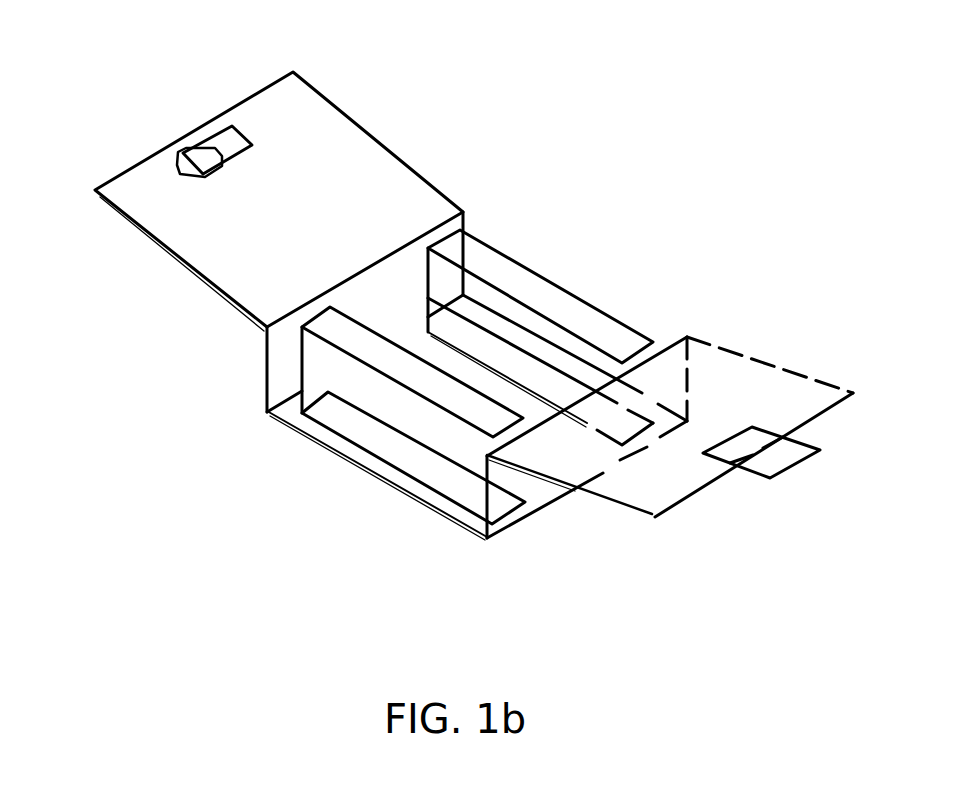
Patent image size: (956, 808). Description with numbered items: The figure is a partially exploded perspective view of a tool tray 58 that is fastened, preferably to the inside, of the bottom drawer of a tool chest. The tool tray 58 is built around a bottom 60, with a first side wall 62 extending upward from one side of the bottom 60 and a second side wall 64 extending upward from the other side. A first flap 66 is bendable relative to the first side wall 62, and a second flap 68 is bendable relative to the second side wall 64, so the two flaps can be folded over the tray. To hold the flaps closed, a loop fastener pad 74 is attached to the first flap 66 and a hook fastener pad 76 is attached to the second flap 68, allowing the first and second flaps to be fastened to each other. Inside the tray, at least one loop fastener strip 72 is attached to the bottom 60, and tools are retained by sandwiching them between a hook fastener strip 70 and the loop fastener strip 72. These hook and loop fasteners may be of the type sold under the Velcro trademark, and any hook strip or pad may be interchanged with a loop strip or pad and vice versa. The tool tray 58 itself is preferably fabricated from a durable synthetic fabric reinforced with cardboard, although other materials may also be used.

The tool tray 58 is at (262, 385).
The bottom 60 is at (482, 530).
The first side wall 62 is at (262, 352).
The second side wall 64 is at (545, 492).
The first flap 66 is at (368, 131).
The second flap 68 is at (718, 350).
The hook fastener strip 70 is at (557, 308).
The loop fastener strip 72 is at (457, 332).
The loop fastener pad 74 is at (205, 158).
The hook fastener pad 76 is at (782, 478).